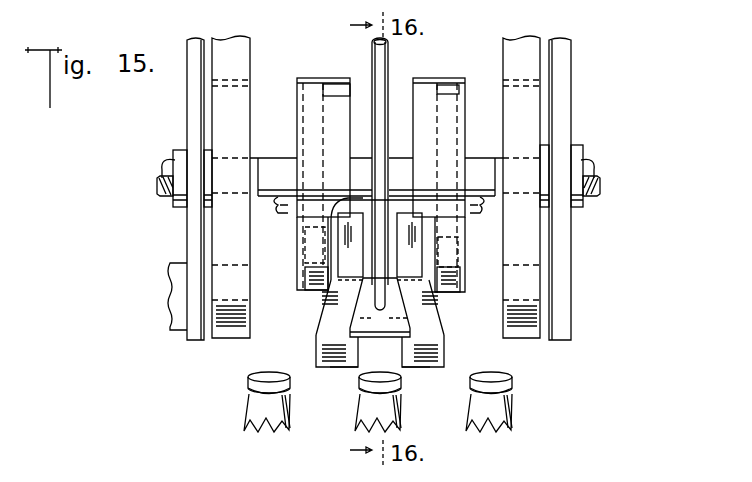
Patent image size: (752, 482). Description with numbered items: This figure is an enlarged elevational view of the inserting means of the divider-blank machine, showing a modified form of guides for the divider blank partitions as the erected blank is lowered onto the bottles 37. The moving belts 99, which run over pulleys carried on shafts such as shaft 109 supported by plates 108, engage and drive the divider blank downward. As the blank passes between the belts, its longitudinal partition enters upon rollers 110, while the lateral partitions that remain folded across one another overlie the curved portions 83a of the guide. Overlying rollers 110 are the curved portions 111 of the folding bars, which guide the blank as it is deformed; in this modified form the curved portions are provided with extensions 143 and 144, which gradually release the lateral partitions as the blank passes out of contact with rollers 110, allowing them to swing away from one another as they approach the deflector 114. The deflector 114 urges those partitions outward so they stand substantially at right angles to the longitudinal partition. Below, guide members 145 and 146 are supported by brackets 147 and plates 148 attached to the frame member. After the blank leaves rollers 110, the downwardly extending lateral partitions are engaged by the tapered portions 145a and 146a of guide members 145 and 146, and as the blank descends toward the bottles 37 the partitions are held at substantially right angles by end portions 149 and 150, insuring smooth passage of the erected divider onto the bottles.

The bottles 37 is at (268, 430).
The curved portions of guide 83a is at (365, 243).
The moving belts 99 is at (228, 245).
The plates 108 is at (188, 116).
The shaft 109 is at (272, 168).
The rollers 110 is at (302, 78).
The curved portion of folding bar 111 is at (336, 92).
The deflector 114 is at (382, 338).
The extension 143 is at (462, 292).
The extension 144 is at (308, 283).
The guide member 145 is at (444, 350).
The tapered portion of guide member 145a is at (442, 306).
The guide member 146 is at (318, 355).
The tapered portion of guide member 146a is at (330, 290).
The brackets 147 is at (347, 260).
The plates 148 is at (297, 183).
The end portion of guide member 149 is at (410, 365).
The end portion of guide member 150 is at (340, 364).